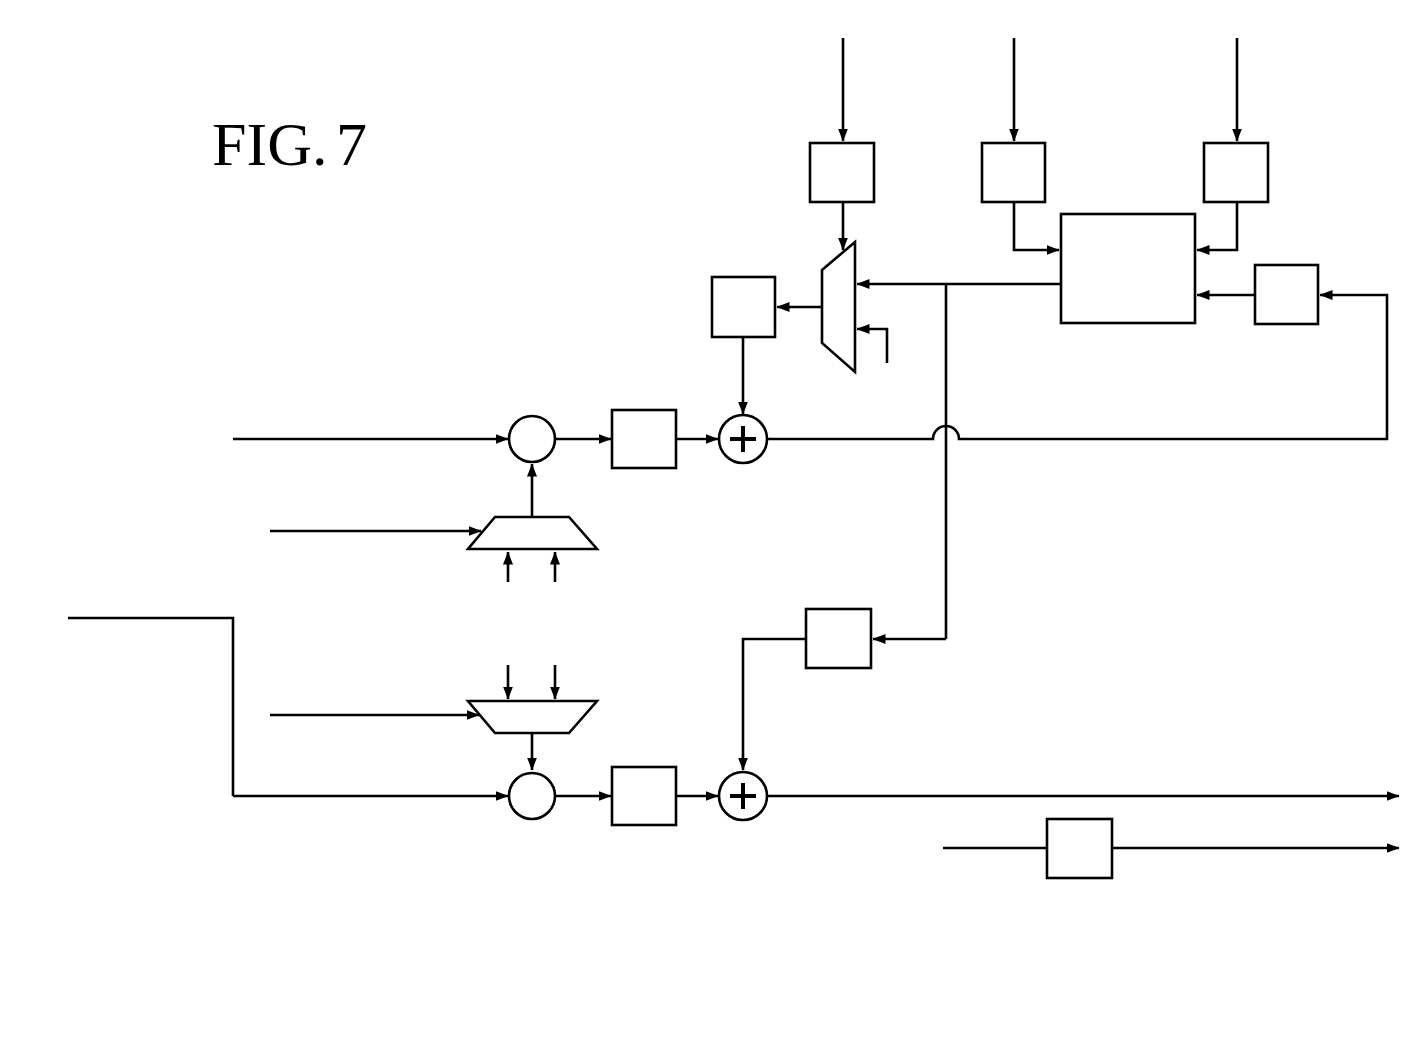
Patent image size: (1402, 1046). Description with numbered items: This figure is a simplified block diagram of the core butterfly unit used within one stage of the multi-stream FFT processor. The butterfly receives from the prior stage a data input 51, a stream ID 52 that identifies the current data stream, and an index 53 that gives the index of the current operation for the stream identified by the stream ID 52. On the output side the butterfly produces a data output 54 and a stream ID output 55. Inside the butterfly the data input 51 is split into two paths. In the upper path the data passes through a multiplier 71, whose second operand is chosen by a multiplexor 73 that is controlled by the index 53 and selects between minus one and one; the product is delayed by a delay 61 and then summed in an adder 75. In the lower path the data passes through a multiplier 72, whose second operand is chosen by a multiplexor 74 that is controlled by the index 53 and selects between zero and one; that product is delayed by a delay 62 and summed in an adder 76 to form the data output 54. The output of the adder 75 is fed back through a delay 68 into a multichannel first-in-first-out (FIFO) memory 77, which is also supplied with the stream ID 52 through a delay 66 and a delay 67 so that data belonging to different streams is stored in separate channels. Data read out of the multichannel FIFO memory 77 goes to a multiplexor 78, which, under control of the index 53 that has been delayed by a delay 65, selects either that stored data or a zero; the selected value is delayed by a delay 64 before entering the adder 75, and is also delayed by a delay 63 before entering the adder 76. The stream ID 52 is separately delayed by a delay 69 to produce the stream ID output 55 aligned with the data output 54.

The data input 51 is at (128, 618).
The stream ID 52 is at (1014, 108).
The index 53 is at (843, 108).
The data output 54 is at (1218, 797).
The stream ID output 55 is at (1218, 848).
The delay 61 is at (648, 410).
The delay 62 is at (648, 825).
The delay 63 is at (838, 609).
The delay 64 is at (740, 277).
The delay 65 is at (810, 160).
The delay 66 is at (1045, 170).
The delay 67 is at (1268, 172).
The delay 68 is at (1283, 324).
The delay 69 is at (1095, 878).
The multiplier 71 is at (530, 416).
The multiplier 72 is at (530, 819).
The multiplexor 73 is at (583, 530).
The multiplexor 74 is at (583, 718).
The adder 75 is at (743, 463).
The adder 76 is at (758, 777).
The multichannel first-in-first-out (FIFO) memory 77 is at (1110, 323).
The multiplexor 78 is at (836, 354).